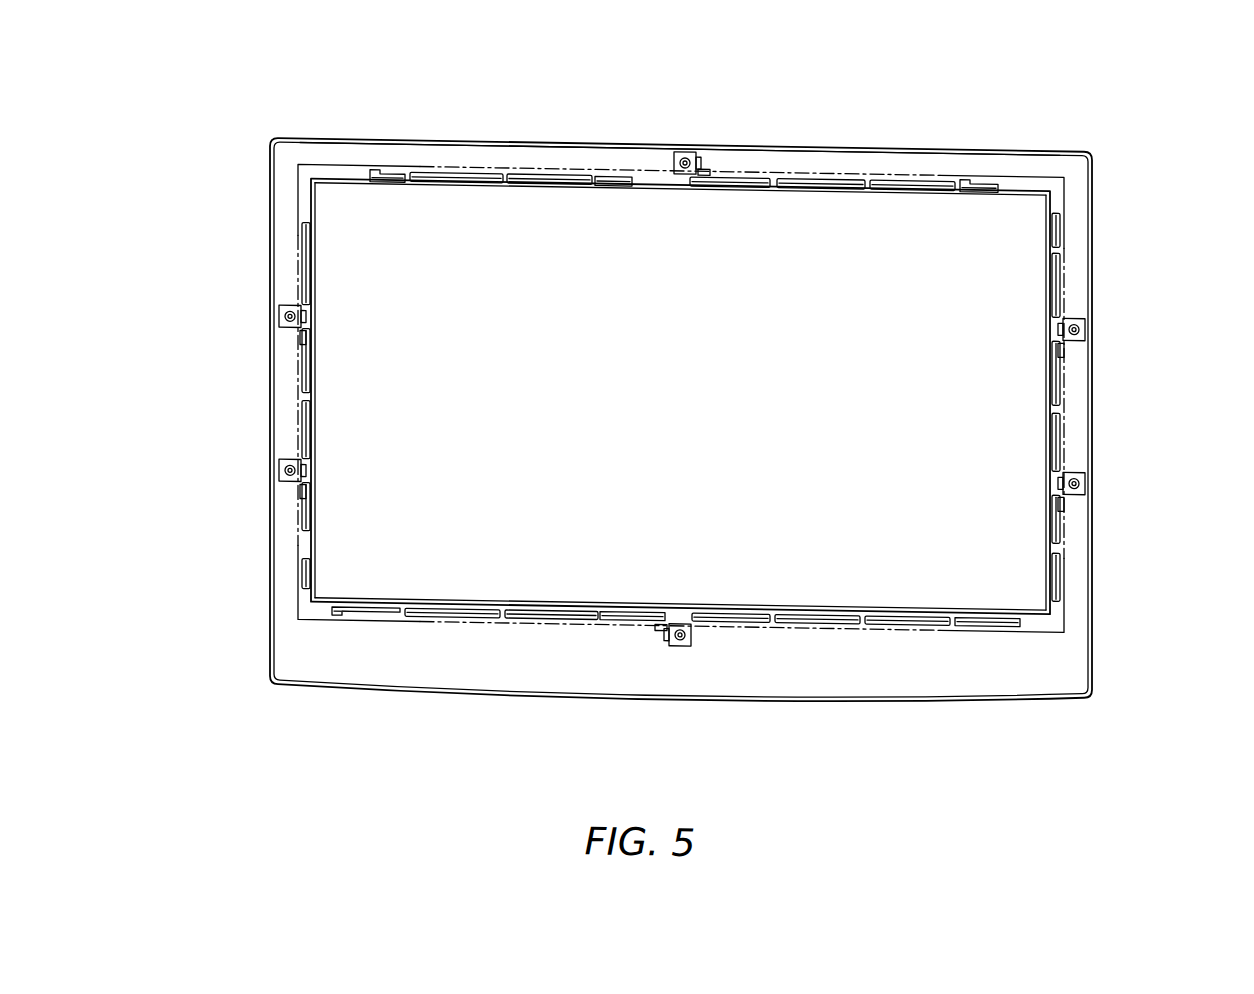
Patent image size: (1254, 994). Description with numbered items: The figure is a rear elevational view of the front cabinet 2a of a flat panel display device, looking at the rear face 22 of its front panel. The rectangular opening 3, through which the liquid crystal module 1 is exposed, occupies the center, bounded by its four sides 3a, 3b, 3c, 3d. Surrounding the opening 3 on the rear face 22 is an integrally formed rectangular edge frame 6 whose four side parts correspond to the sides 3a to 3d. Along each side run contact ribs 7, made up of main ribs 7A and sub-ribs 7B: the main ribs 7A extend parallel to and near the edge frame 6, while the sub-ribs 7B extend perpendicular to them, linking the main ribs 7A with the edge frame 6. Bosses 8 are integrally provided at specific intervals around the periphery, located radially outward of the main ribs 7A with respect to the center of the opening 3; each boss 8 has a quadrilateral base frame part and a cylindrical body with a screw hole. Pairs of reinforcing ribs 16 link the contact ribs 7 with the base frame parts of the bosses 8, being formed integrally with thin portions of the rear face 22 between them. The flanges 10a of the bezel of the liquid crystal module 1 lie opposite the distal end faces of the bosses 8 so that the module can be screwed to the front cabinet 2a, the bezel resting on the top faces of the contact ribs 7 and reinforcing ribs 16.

The liquid crystal module 1 is at (1037, 160).
The front cabinet 2a is at (625, 137).
The opening 3 is at (1014, 244).
The side of the opening 3a is at (672, 187).
The side of the opening 3b is at (317, 393).
The side of the opening 3c is at (668, 603).
The side of the opening 3d is at (1046, 393).
The rectangular edge frame 6 is at (736, 614).
The contact ribs 7 is at (541, 168).
The main ribs 7A is at (471, 168).
The sub-ribs 7B is at (403, 168).
The bosses 8 is at (685, 145).
The flanges 10a is at (700, 154).
The reinforcing ribs 16 is at (697, 163).
The rear face 22 is at (925, 690).